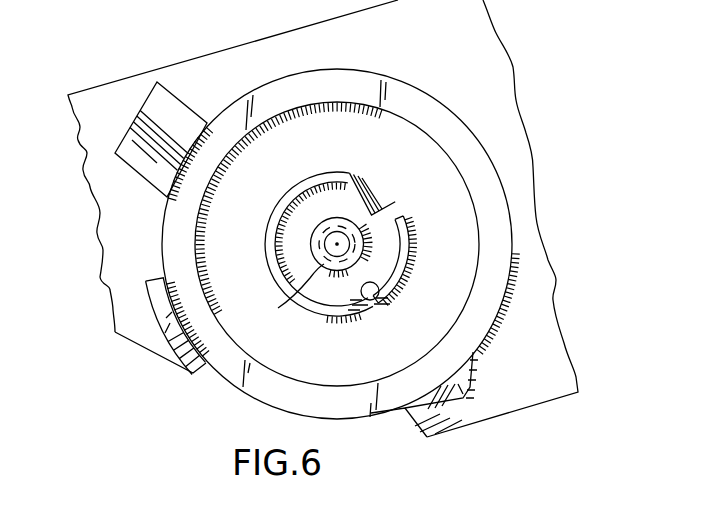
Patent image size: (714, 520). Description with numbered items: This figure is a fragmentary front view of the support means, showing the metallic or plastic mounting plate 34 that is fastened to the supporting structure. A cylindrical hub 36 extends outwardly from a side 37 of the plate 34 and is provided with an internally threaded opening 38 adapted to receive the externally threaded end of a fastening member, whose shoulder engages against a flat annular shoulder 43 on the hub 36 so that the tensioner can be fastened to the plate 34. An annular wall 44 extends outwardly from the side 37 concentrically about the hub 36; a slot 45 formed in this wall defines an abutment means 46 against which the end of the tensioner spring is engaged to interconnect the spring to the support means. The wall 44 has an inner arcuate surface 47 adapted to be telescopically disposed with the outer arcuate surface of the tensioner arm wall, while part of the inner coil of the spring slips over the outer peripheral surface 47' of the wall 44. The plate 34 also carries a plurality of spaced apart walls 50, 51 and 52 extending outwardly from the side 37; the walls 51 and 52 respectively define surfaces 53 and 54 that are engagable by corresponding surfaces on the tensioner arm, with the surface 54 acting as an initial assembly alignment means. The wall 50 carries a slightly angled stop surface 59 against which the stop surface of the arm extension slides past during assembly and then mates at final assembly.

The mounting plate 34 is at (498, 80).
The cylindrical hub 36 is at (310, 250).
The side of the plate 37 is at (518, 153).
The internally threaded opening 38 is at (327, 240).
The flat annular shoulder 43 is at (280, 305).
The annular wall 44 is at (326, 174).
The slot 45 is at (403, 197).
The abutment means 46 is at (401, 217).
The inner arcuate surface 47 is at (391, 310).
The outer peripheral surface 47' is at (326, 341).
The wall 50 is at (125, 143).
The wall 51 is at (158, 322).
The wall 52 is at (462, 398).
The surface 53 is at (196, 374).
The surface 54 is at (405, 409).
The stop surface 59 is at (174, 92).